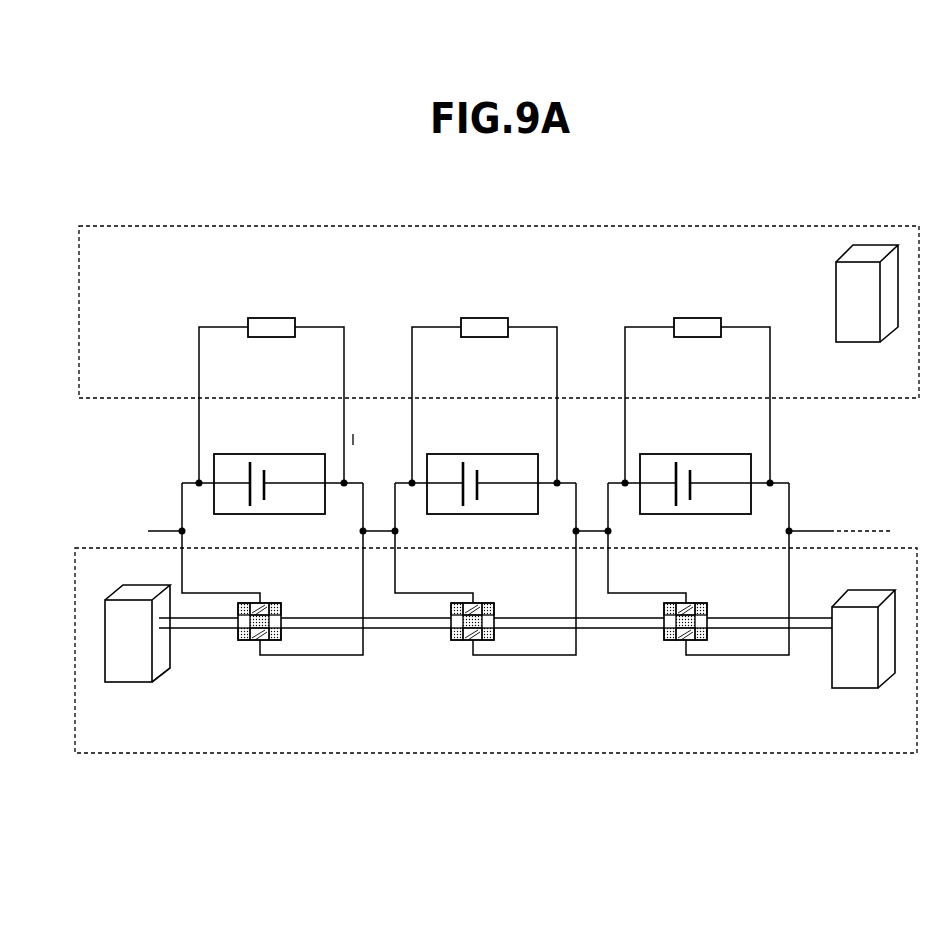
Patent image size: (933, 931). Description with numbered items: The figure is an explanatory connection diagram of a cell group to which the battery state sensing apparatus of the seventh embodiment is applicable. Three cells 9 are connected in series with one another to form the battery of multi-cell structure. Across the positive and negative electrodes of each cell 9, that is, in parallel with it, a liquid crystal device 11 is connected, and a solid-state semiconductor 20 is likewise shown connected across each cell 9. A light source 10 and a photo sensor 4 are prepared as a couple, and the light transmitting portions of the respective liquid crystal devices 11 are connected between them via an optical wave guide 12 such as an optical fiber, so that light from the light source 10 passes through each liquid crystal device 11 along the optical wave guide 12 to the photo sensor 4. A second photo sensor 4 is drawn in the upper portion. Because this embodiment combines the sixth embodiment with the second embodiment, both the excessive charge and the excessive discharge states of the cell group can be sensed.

The solid-state semiconductor 20 is at (484, 308).
The cell 9 is at (482, 464).
The liquid crystal device 11 is at (485, 601).
The optical wave guide 12 is at (495, 654).
The light source 10 is at (132, 656).
The photo sensor 4 is at (860, 489).